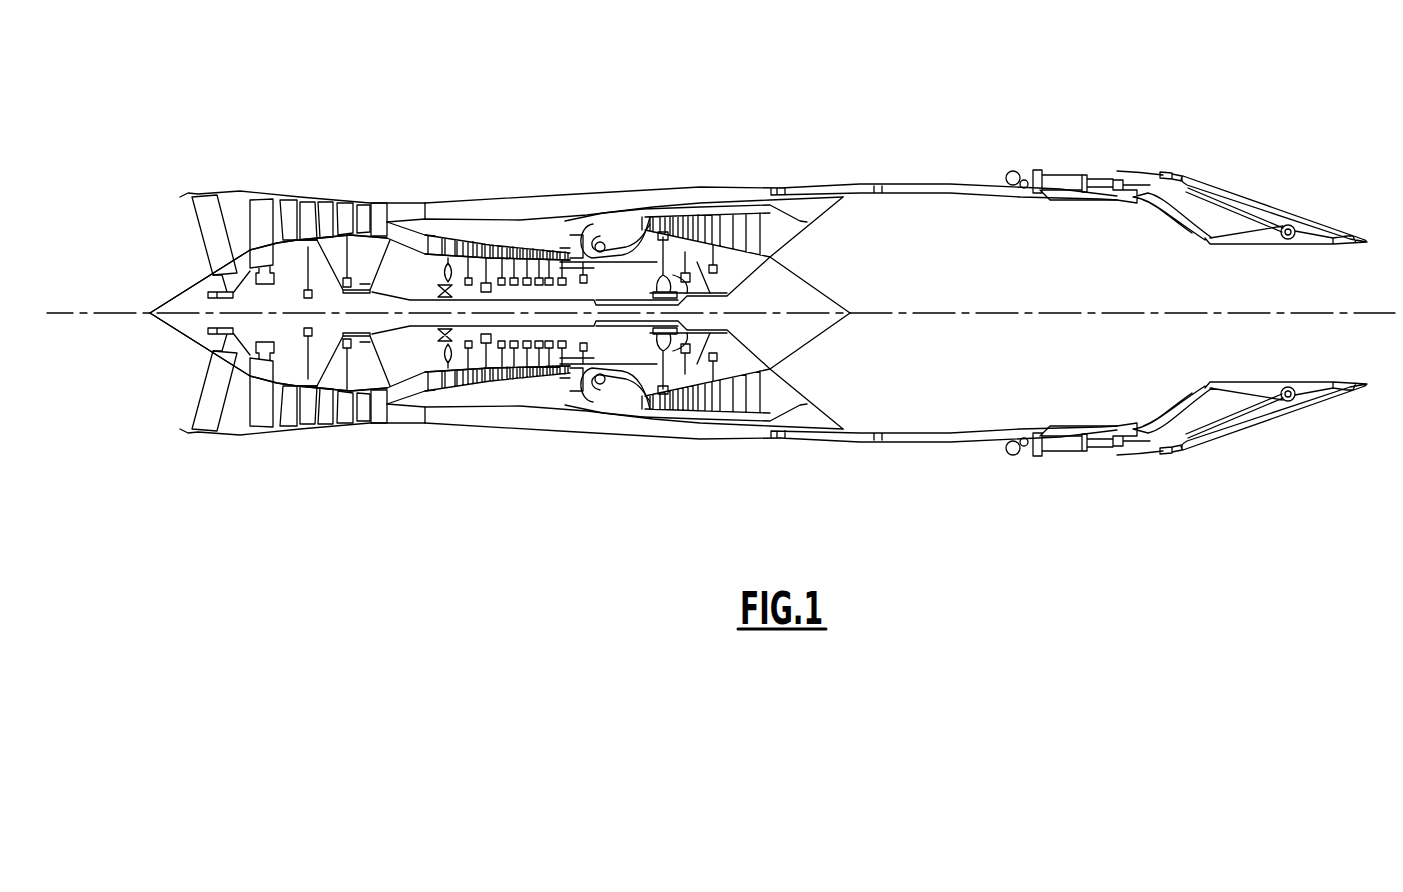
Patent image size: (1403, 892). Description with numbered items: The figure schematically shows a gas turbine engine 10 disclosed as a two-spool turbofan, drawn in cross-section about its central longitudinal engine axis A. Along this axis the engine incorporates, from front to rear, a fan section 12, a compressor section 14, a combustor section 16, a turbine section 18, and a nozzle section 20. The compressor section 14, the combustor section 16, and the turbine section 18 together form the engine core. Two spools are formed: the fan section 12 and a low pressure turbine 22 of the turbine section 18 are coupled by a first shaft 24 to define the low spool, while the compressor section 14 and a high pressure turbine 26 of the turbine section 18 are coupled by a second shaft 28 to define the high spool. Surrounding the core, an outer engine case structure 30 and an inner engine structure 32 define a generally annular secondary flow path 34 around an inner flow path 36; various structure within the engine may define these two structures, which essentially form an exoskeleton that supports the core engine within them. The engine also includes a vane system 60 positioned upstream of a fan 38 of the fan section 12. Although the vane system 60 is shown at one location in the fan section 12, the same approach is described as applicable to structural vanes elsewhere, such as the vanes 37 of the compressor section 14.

The gas turbine engine 10 is at (721, 285).
The fan section 12 is at (284, 330).
The compressor section 14 is at (497, 435).
The combustor section 16 is at (599, 364).
The turbine section 18 is at (710, 446).
The nozzle section 20 is at (1217, 478).
The low pressure turbine 22 is at (702, 408).
The first shaft 24 is at (388, 342).
The high pressure turbine 26 is at (665, 400).
The second shaft 28 is at (599, 316).
The outer engine case structure 30 is at (398, 422).
The inner engine structure 32 is at (513, 392).
The secondary flow path 34 is at (470, 420).
The inner flow path 36 is at (383, 405).
The vanes 37 is at (433, 390).
The fan 38 is at (263, 212).
The vane system 60 is at (231, 212).
The central longitudinal engine axis A is at (1340, 313).